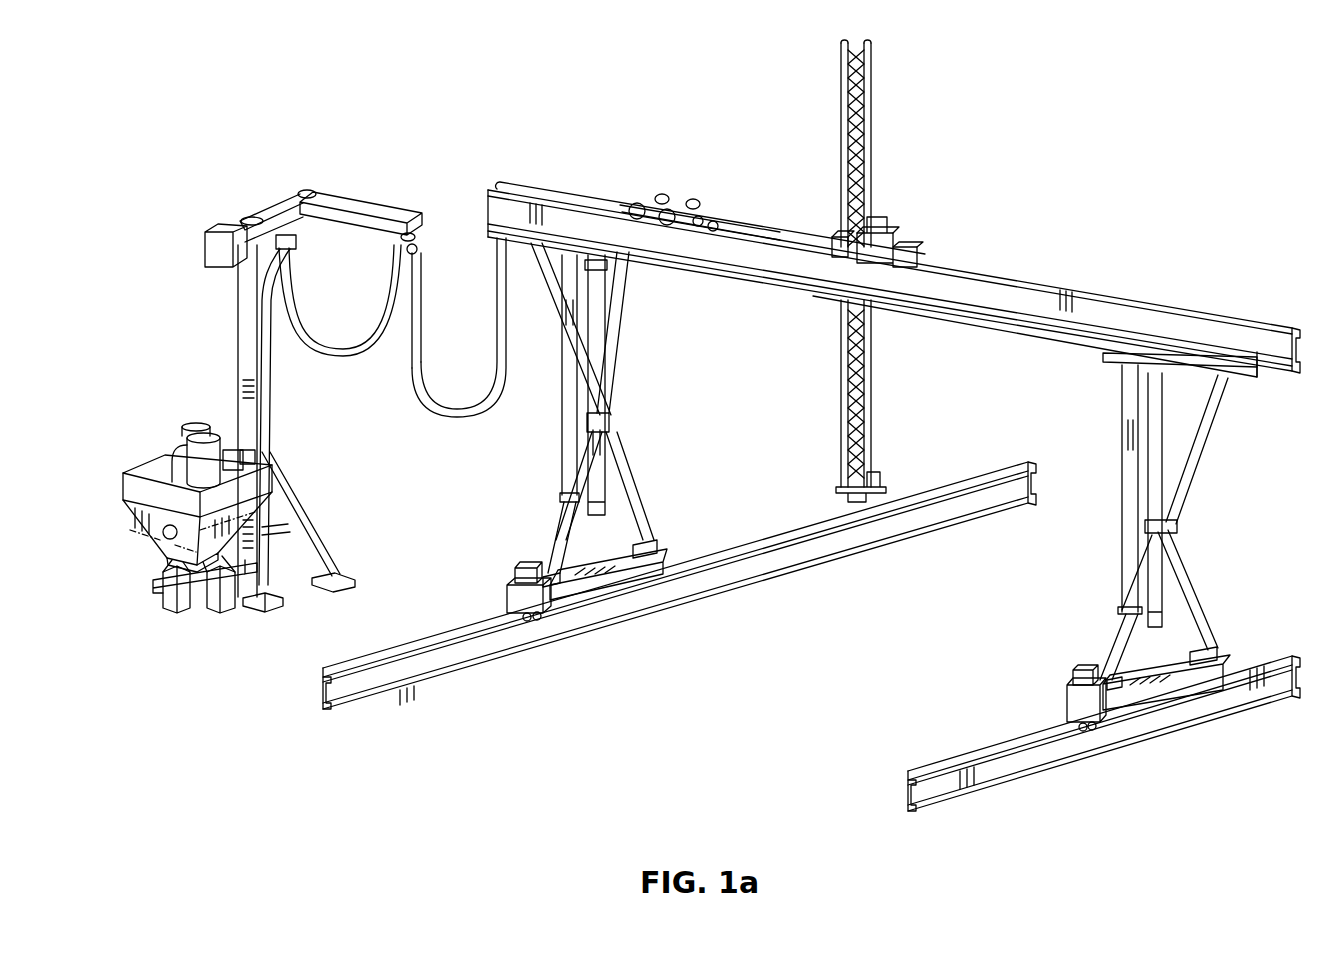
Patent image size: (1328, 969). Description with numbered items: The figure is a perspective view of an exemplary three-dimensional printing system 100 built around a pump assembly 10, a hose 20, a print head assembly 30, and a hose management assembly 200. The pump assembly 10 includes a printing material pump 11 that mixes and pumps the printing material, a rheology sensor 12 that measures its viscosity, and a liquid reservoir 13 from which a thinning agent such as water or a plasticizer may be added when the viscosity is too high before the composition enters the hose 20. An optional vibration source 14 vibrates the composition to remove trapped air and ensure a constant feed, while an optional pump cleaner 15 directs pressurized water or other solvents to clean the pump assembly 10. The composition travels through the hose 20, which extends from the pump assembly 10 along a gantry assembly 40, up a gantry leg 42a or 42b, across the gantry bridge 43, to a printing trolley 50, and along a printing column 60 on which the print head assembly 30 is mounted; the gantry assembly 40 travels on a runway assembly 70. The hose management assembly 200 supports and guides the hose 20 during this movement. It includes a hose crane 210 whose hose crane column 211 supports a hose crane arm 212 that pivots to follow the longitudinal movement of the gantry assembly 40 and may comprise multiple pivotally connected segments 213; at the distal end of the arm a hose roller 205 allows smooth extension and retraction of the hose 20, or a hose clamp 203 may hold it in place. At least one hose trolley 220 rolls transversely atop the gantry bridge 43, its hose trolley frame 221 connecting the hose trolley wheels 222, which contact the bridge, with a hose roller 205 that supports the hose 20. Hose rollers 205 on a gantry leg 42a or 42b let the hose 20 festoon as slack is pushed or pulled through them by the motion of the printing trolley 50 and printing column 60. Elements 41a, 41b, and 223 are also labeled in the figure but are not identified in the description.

The three-dimensional printing system 100 is at (243, 784).
The pump assembly 10 is at (150, 450).
The printing material pump 11 is at (190, 583).
The rheology sensor 12 is at (255, 470).
The liquid reservoir 13 is at (200, 427).
The vibration source 14 is at (168, 544).
The pump cleaner 15 is at (223, 427).
The hose 20 is at (445, 430).
The print head assembly 30 is at (843, 497).
The gantry assembly 40 is at (1090, 268).
The base carriage 41a is at (1152, 690).
The base carriage 41b is at (607, 575).
The gantry leg 42a is at (1120, 447).
The gantry leg 42b is at (610, 398).
The gantry bridge 43 is at (988, 332).
The printing trolley 50 is at (905, 236).
The printing column 60 is at (880, 46).
The runway assembly 70 is at (370, 710).
The hose management assembly 200 is at (350, 228).
The hose clamp 203 is at (287, 318).
The hose roller 205 is at (415, 318).
The hose crane 210 is at (237, 217).
The hose crane column 211 is at (236, 350).
The hose crane arm 212 is at (300, 186).
The pivotally connected segments 213 is at (268, 212).
The hose trolley 220 is at (680, 183).
The hose trolley frame 221 is at (675, 222).
The hose trolley wheels 222 is at (695, 203).
The carriage roller 223 is at (712, 224).